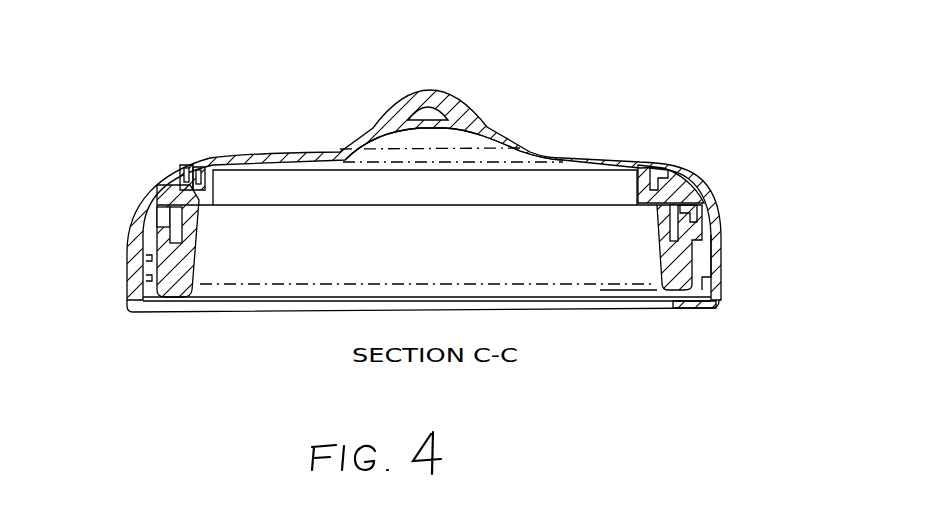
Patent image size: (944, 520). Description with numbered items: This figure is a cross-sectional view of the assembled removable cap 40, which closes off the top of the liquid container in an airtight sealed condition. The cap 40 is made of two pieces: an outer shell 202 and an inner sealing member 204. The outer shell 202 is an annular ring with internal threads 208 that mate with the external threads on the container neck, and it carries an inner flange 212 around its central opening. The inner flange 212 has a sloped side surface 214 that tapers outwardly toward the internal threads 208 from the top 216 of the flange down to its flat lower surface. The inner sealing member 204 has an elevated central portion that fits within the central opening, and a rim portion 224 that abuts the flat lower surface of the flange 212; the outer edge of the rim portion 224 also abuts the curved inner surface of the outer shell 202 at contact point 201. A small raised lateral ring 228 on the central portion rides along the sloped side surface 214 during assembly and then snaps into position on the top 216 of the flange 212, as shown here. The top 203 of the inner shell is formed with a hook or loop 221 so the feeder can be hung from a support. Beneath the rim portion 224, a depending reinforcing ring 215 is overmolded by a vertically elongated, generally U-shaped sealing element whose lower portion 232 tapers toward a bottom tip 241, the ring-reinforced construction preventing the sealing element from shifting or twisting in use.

The removable cap 40 is at (799, 70).
The contact point 201 is at (150, 212).
The outer shell 202 is at (716, 221).
The top of the inner shell 203 is at (497, 136).
The inner sealing member 204 is at (600, 158).
The internal threads 208 is at (698, 301).
The inner flange 212 is at (185, 172).
The sloped side surface 214 is at (200, 187).
The reinforcing ring 215 is at (182, 228).
The top of the flange 216 is at (200, 178).
The hook or loop 221 is at (447, 107).
The rim portion 224 is at (705, 186).
The raised lateral ring 228 is at (670, 172).
The lower portion 232 is at (680, 259).
The bottom tip 241 is at (672, 297).